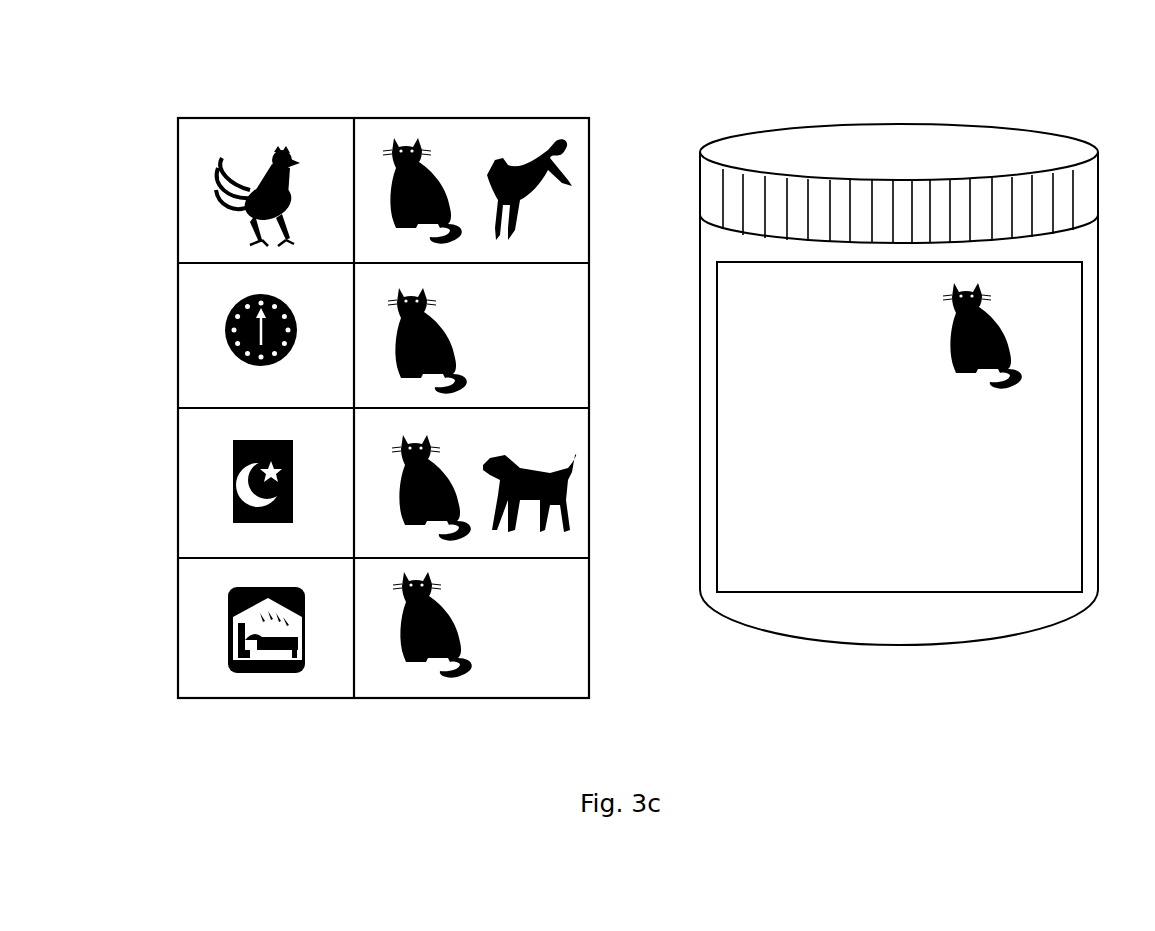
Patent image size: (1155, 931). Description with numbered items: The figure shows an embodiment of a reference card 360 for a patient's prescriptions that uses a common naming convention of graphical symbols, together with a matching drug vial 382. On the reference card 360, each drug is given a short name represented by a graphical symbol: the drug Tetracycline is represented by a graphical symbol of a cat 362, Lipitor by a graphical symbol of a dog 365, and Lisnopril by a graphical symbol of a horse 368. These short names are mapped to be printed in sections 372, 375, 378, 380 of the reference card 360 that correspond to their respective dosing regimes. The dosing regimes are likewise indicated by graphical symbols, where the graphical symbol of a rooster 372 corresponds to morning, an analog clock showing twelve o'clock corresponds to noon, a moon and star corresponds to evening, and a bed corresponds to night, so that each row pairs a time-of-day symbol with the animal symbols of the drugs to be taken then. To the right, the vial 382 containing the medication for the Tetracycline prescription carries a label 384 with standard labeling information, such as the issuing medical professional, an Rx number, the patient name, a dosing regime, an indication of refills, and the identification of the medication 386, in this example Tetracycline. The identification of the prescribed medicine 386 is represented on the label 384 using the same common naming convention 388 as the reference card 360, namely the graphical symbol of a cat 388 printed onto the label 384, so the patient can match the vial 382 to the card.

The reference card 360 is at (224, 66).
The graphical symbol of a cat 362 is at (406, 663).
The graphical symbol of a dog 365 is at (537, 535).
The graphical symbol of a horse 368 is at (520, 142).
The graphical symbol of a rooster 372 is at (195, 203).
The section of reference card 375 is at (195, 353).
The section of reference card 378 is at (195, 492).
The section of reference card 380 is at (195, 648).
The vial 382 is at (841, 148).
The label 384 is at (918, 595).
The identification of the medication 386 is at (732, 480).
The common naming convention (graphical symbol of a cat) 388 is at (1017, 321).